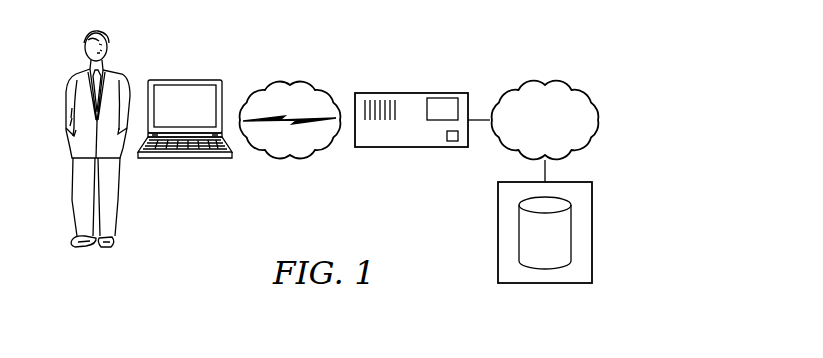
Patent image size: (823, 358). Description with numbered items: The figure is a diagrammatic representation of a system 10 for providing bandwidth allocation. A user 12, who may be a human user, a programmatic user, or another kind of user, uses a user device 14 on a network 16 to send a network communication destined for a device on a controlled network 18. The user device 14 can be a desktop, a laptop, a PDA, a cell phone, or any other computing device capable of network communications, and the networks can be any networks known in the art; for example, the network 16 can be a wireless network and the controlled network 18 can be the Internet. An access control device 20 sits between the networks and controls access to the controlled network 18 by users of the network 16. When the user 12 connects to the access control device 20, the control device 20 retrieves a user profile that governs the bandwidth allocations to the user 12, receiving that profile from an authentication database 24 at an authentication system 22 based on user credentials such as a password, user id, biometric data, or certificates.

The system 10 is at (515, 54).
The user 12 is at (67, 88).
The user device 14 is at (186, 80).
The network 16 is at (316, 84).
The controlled network 18 is at (533, 132).
The access control device 20 is at (412, 93).
The authentication system 22 is at (550, 284).
The authentication database 24 is at (533, 251).